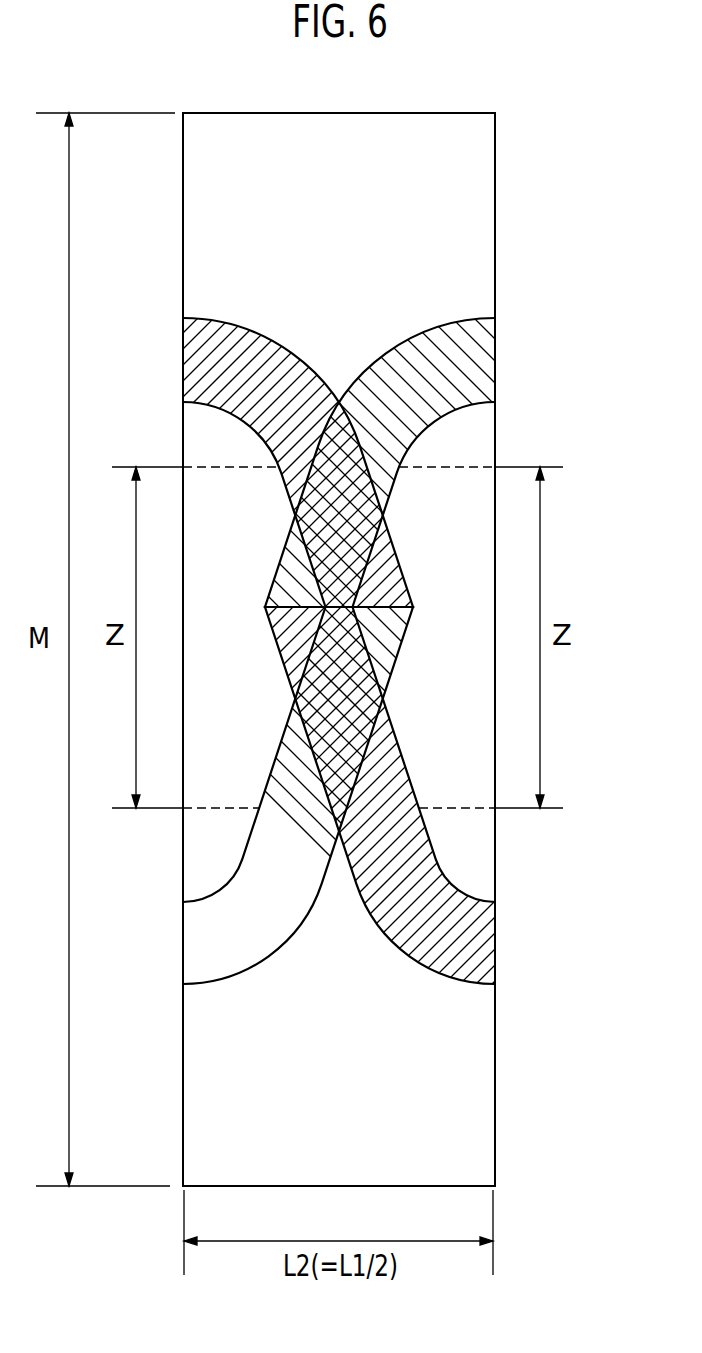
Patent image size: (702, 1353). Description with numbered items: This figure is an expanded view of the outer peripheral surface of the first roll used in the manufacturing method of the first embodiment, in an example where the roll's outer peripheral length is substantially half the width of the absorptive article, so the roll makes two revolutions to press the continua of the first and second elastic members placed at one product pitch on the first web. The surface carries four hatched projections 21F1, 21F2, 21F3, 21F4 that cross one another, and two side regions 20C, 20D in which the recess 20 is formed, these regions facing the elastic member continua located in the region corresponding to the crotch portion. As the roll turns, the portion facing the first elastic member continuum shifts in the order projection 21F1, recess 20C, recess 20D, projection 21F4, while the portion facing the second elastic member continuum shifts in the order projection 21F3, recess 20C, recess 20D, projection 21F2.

The recess 20 is at (462, 241).
The recess 20C is at (218, 486).
The recess 20D is at (460, 486).
The projection 21F1 is at (410, 354).
The projection 21F2 is at (278, 927).
The projection 21F3 is at (403, 927).
The projection 21F4 is at (269, 353).